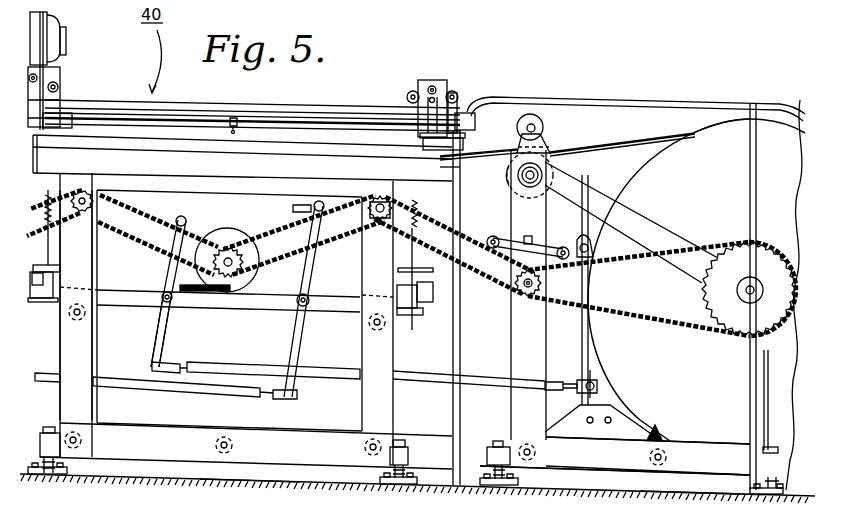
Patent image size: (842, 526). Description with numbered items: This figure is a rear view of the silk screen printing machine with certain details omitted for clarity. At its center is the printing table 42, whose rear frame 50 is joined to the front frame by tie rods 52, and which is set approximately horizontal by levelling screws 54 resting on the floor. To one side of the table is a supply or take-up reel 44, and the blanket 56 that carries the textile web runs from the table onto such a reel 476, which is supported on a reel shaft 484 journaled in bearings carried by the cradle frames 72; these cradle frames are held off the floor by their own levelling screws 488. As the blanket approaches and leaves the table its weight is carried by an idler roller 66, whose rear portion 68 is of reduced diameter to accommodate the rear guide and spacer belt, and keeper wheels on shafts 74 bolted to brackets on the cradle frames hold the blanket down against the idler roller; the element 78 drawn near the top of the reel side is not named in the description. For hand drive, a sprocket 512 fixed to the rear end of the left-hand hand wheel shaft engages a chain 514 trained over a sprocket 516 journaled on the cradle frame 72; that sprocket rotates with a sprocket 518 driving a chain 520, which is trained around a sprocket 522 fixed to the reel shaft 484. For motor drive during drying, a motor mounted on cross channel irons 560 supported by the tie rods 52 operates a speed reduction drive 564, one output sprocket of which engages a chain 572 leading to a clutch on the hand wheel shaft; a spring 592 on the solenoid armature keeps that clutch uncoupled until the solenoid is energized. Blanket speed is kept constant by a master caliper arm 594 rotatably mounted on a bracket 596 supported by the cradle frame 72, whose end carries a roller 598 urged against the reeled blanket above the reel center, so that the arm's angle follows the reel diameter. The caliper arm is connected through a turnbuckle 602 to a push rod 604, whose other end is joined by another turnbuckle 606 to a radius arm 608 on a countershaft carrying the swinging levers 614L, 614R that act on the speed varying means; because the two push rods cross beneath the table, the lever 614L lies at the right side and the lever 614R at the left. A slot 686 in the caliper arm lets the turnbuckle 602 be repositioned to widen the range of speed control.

The printing table 42 is at (258, 482).
The supply or take-up reel 44 is at (700, 491).
The rear frame 50 is at (83, 373).
The tie rods 52 is at (382, 435).
The levelling screws 54 is at (406, 471).
The blanket 56 is at (653, 133).
The idler roller 66 is at (508, 184).
The reduced-diameter rear of idler roller 68 is at (510, 177).
The cradle frame 72 is at (582, 463).
The keeper wheel shaft 74 is at (562, 101).
The roller 78 is at (528, 114).
The reel 476 is at (704, 150).
The reel shaft 484 is at (748, 297).
The levelling screws 488 is at (477, 476).
The sprocket 512 is at (379, 199).
The chain 514 is at (462, 257).
The sprocket 516 is at (522, 302).
The sprocket 518 is at (514, 289).
The chain 520 is at (640, 257).
The sprocket 522 is at (706, 290).
The cross channel irons 560 is at (130, 300).
The speed reduction drive 564 is at (252, 276).
The chain 572 is at (266, 236).
The spring 592 is at (398, 212).
The master caliper arm 594 is at (584, 330).
The bracket 596 is at (624, 425).
The roller 598 is at (583, 238).
The turnbuckle 602 is at (575, 381).
The push rod 604 is at (422, 375).
The turnbuckle 606 is at (170, 362).
The radius arm 608 is at (172, 318).
The swinging lever 614L is at (175, 266).
The swinging lever 614R is at (310, 263).
The slot 686 is at (592, 383).